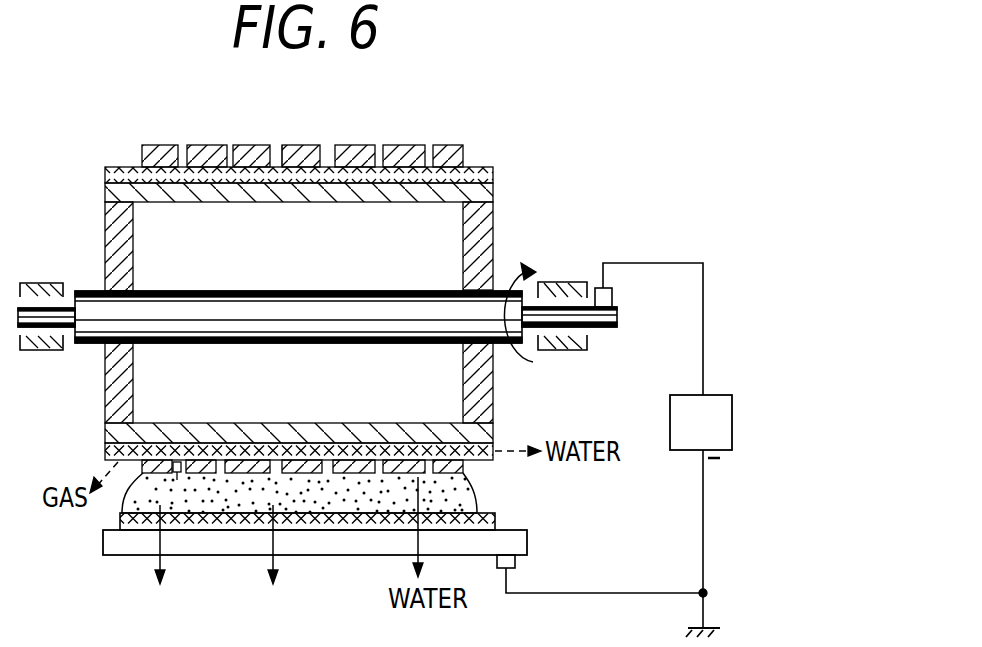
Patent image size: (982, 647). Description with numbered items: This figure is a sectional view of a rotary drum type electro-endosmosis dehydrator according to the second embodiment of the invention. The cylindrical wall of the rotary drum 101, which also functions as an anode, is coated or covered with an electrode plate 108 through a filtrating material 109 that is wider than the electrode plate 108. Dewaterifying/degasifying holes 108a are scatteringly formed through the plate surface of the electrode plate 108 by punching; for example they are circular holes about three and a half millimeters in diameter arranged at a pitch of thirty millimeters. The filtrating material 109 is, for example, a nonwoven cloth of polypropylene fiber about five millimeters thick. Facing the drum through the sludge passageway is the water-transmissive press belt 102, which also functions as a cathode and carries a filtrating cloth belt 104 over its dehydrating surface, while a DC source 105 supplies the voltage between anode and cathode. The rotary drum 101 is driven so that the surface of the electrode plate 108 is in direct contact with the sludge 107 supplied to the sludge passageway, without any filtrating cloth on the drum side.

The rotary drum 101 is at (482, 213).
The water-transmissive press belt 102 is at (115, 548).
The filtrating cloth belt 104 is at (120, 518).
The DC source 105 is at (733, 399).
The sludge 107 is at (477, 490).
The electrode plate 108 is at (400, 145).
The dewaterifying/degasifying holes 108a is at (276, 147).
The filtrating material 109 is at (125, 165).